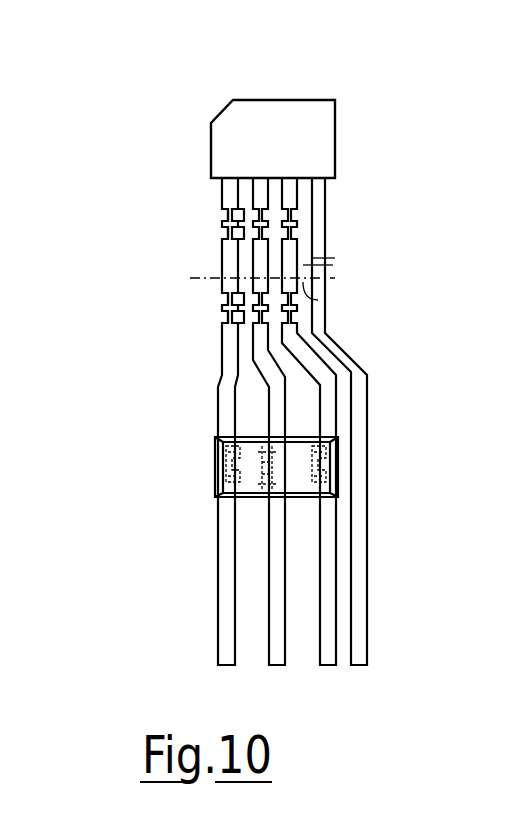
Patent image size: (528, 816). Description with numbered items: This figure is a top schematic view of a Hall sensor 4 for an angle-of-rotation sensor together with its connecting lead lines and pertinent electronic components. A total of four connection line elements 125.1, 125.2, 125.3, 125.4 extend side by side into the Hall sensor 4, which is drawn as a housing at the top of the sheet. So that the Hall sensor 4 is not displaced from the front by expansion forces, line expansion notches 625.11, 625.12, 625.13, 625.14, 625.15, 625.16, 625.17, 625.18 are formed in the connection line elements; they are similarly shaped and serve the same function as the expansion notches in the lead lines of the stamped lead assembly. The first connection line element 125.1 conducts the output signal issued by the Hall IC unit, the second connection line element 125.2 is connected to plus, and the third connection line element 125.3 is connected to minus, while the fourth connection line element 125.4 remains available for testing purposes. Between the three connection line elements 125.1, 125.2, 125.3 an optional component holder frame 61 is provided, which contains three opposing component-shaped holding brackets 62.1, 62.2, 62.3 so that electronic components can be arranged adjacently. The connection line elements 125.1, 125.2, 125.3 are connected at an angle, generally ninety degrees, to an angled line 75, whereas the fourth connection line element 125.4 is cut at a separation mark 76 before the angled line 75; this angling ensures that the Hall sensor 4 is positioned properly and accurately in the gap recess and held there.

The Hall sensor 4 is at (287, 110).
The first connection line element 125.1 is at (232, 192).
The second connection line element 125.2 is at (260, 203).
The third connection line element 125.3 is at (290, 250).
The fourth connection line element 125.4 is at (320, 258).
The line expansion notch 625.11 is at (221, 213).
The line expansion notch 625.12 is at (221, 222).
The line expansion notch 625.13 is at (221, 230).
The line expansion notch 625.14 is at (221, 247).
The line expansion notch 625.15 is at (222, 296).
The line expansion notch 625.16 is at (222, 305).
The line expansion notch 625.17 is at (240, 318).
The line expansion notch 625.18 is at (222, 318).
The separation mark 76 is at (318, 265).
The angled line 75 is at (318, 300).
The component holder frame 61 is at (215, 440).
The shaped holding bracket 62.1 is at (232, 468).
The shaped holding bracket 62.2 is at (262, 466).
The shaped holding bracket 62.3 is at (316, 463).